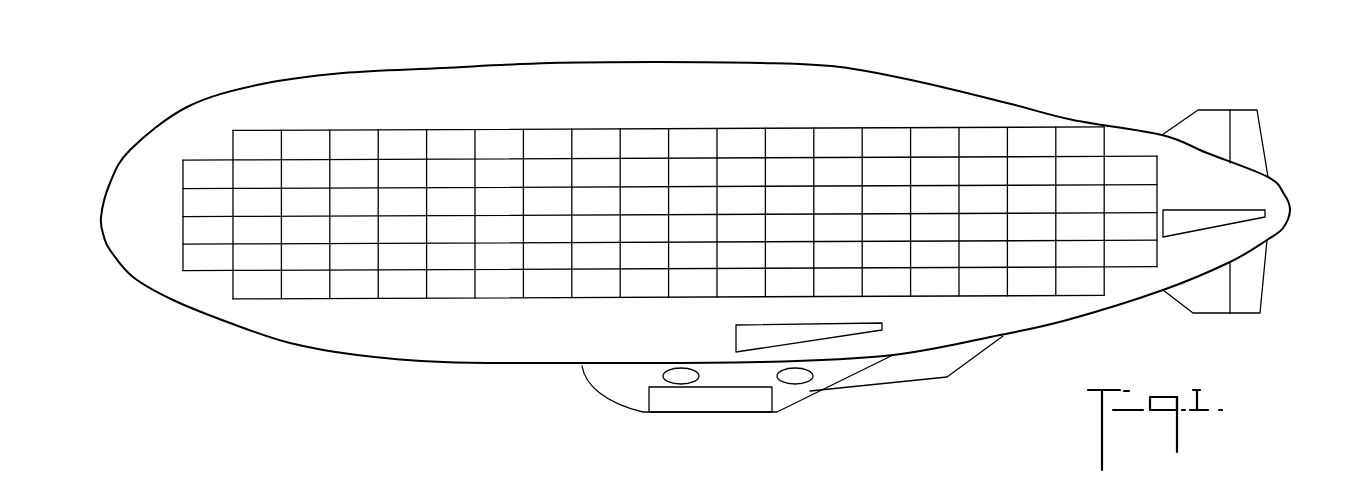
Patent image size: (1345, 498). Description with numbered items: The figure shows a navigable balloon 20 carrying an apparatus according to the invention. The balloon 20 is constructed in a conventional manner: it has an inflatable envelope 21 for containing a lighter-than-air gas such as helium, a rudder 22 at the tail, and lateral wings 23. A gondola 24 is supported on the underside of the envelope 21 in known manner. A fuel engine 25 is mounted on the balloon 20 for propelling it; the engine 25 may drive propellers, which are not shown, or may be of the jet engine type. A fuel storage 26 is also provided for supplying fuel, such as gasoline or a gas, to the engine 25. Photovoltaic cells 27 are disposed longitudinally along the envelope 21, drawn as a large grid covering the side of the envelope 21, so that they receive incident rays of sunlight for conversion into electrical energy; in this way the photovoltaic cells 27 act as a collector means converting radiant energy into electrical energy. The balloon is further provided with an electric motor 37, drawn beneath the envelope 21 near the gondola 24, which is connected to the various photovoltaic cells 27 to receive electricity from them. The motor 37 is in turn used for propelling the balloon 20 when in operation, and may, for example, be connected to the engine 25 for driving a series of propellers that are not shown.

The balloon 20 is at (695, 232).
The inflatable envelope 21 is at (920, 82).
The rudder 22 is at (1190, 212).
The lateral wings 23 is at (1215, 117).
The gondola 24 is at (675, 405).
The fuel engine 25 is at (797, 379).
The fuel storage 26 is at (908, 378).
The photovoltaic cells 27 is at (458, 158).
The electric motor 37 is at (677, 369).